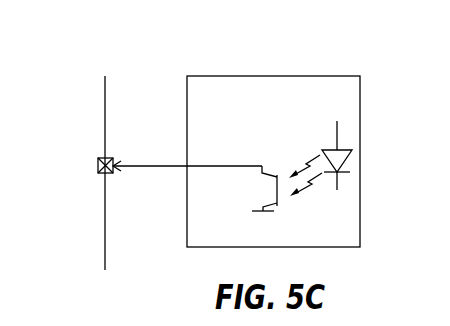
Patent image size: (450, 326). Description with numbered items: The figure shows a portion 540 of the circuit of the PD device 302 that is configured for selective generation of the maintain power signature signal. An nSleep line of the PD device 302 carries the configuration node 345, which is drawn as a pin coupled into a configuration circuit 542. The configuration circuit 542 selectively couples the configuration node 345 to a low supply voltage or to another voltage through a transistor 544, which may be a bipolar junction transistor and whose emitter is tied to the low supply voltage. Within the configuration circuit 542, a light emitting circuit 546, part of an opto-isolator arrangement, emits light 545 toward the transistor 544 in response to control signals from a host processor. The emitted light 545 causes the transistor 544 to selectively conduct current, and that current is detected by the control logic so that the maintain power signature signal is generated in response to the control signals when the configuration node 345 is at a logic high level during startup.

The portion 540 is at (156, 46).
The PD device 302 is at (105, 103).
The configuration node 345 is at (110, 158).
The configuration circuit 542 is at (262, 76).
The transistor 544 is at (277, 192).
The light 545 is at (311, 190).
The light emitting circuit 546 is at (343, 150).